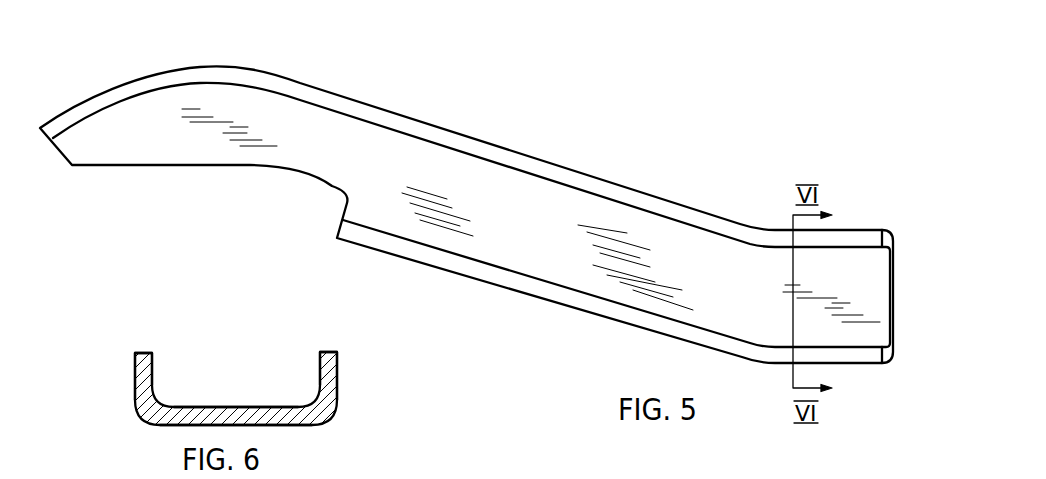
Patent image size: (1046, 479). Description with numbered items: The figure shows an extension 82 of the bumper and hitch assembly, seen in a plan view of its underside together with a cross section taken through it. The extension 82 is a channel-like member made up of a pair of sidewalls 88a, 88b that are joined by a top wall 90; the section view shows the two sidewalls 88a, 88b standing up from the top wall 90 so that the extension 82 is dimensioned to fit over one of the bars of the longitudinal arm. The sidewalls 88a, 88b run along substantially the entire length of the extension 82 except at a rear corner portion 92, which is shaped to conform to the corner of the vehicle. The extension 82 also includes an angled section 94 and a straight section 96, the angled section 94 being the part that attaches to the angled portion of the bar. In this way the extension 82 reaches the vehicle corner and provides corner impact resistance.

In FIG. 5, the extension 82 is at (507, 150).
In FIG. 6, the extension 82 is at (107, 365).
In FIG. 5, the sidewall 88a is at (543, 297).
In FIG. 6, the sidewall 88a is at (333, 360).
In FIG. 5, the sidewall 88b is at (325, 95).
In FIG. 6, the sidewall 88b is at (137, 387).
In FIG. 5, the top wall 90 is at (660, 232).
In FIG. 6, the top wall 90 is at (227, 405).
In FIG. 5, the rear corner portion 92 is at (175, 187).
In FIG. 5, the angled section 94 is at (840, 265).
In FIG. 5, the straight section 96 is at (438, 240).